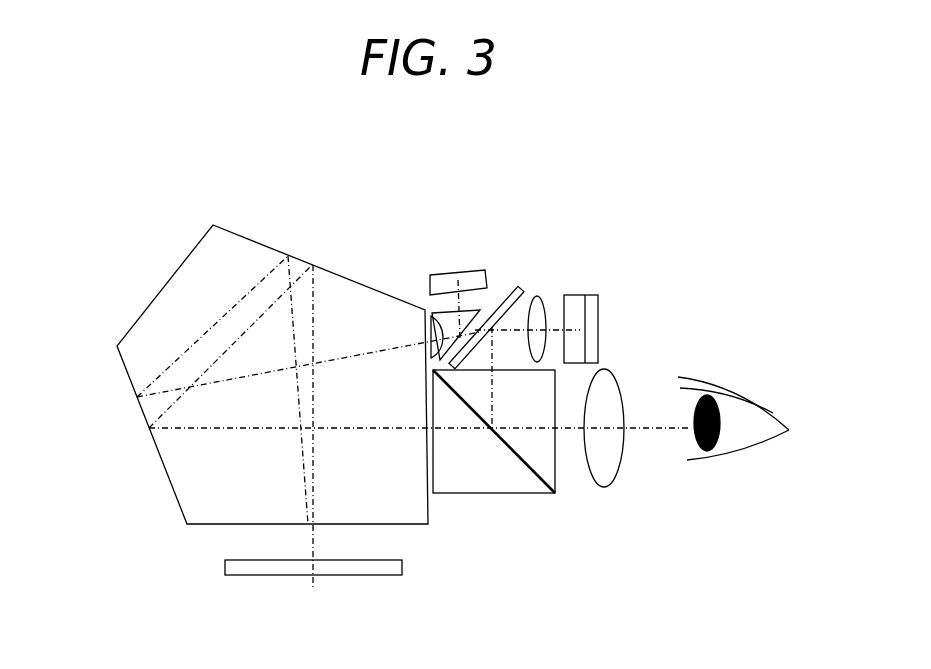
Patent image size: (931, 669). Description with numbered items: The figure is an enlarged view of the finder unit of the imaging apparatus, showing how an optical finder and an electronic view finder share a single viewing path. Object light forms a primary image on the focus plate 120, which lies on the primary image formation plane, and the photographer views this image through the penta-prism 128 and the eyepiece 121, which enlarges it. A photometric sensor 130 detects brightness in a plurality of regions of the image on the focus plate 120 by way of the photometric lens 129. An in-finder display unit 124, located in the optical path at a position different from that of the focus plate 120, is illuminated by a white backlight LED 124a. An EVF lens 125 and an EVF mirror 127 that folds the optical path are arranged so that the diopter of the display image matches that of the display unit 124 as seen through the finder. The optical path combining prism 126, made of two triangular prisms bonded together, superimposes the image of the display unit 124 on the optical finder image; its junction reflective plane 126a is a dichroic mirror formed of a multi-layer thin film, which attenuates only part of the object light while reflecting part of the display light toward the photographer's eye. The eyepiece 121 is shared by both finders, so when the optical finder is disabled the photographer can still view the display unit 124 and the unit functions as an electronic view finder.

The focus detection plate 120 is at (225, 572).
The eyepiece 121 is at (617, 483).
The in-finder display unit 124 is at (573, 315).
The white backlight LED 124a is at (590, 341).
The EVF lens 125 is at (543, 297).
The optical path combining prism 126 is at (527, 493).
The junction reflective plane 126a is at (513, 455).
The EVF mirror 127 is at (522, 284).
The penta-prism 128 is at (152, 317).
The photometric lens 129 is at (428, 314).
The photometric sensor 130 is at (470, 270).